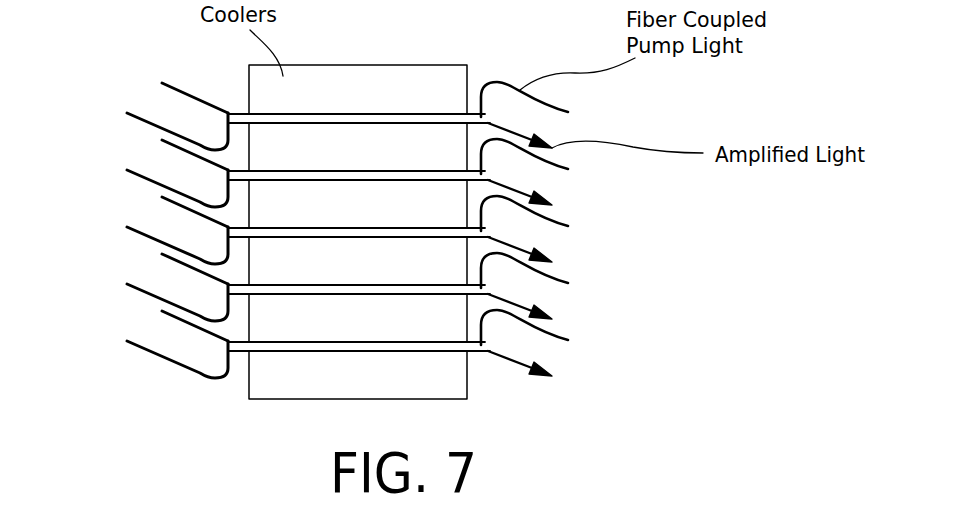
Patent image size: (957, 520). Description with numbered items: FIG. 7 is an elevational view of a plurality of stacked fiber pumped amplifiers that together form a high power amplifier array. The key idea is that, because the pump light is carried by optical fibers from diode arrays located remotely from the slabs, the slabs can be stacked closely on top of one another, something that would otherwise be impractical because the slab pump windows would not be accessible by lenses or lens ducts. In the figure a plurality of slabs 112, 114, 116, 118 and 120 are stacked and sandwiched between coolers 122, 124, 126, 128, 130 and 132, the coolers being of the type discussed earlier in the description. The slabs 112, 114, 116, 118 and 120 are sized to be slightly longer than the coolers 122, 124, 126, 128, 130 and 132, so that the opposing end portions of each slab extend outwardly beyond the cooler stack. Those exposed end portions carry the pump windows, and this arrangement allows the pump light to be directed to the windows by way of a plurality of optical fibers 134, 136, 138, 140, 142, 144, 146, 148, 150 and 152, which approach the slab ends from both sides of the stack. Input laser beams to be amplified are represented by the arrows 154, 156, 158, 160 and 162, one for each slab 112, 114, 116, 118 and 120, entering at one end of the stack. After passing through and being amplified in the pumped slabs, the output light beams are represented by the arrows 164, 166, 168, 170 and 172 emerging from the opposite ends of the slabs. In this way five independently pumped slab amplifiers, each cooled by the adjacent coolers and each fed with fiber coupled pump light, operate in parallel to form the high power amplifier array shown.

The slab 112 is at (423, 98).
The slab 114 is at (423, 155).
The slab 116 is at (423, 212).
The slab 118 is at (423, 269).
The slab 120 is at (423, 326).
The cooler 122 is at (348, 102).
The cooler 124 is at (348, 158).
The cooler 126 is at (348, 216).
The cooler 128 is at (348, 272).
The cooler 130 is at (348, 330).
The cooler 132 is at (348, 386).
The optical fiber 134 is at (137, 117).
The optical fiber 136 is at (137, 174).
The optical fiber 138 is at (137, 231).
The optical fiber 140 is at (137, 288).
The optical fiber 142 is at (137, 345).
The optical fiber 144 is at (568, 112).
The optical fiber 146 is at (568, 169).
The optical fiber 148 is at (568, 226).
The optical fiber 150 is at (568, 283).
The optical fiber 152 is at (568, 340).
The input laser beam arrow 154 is at (161, 84).
The input laser beam arrow 156 is at (161, 141).
The input laser beam arrow 158 is at (161, 198).
The input laser beam arrow 160 is at (161, 255).
The input laser beam arrow 162 is at (161, 312).
The output light beam arrow 164 is at (490, 123).
The output light beam arrow 166 is at (490, 180).
The output light beam arrow 168 is at (490, 237).
The output light beam arrow 170 is at (490, 294).
The output light beam arrow 172 is at (490, 351).